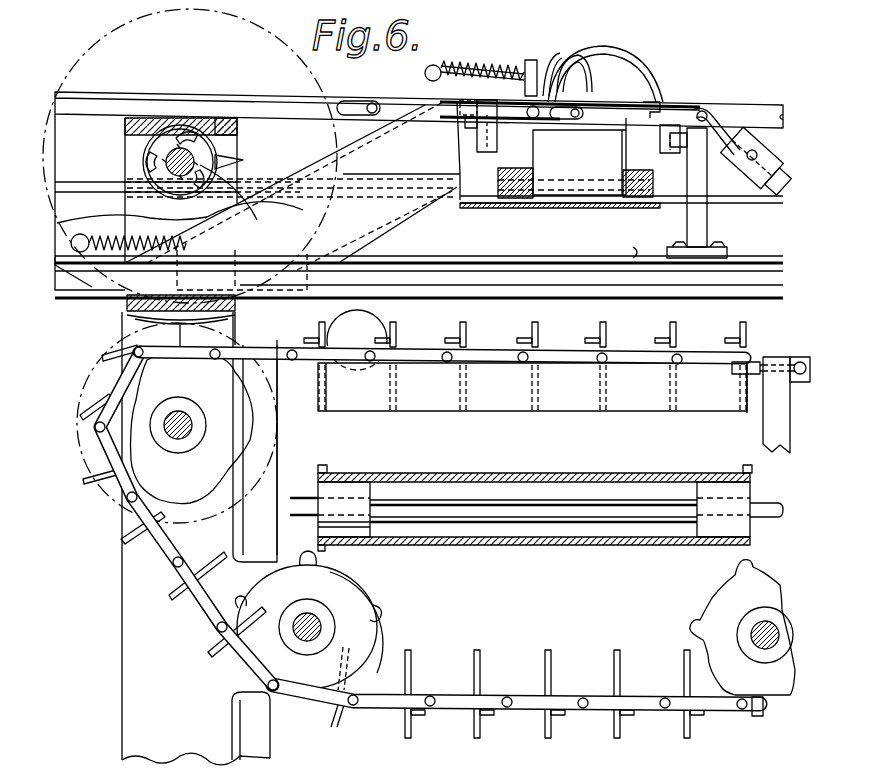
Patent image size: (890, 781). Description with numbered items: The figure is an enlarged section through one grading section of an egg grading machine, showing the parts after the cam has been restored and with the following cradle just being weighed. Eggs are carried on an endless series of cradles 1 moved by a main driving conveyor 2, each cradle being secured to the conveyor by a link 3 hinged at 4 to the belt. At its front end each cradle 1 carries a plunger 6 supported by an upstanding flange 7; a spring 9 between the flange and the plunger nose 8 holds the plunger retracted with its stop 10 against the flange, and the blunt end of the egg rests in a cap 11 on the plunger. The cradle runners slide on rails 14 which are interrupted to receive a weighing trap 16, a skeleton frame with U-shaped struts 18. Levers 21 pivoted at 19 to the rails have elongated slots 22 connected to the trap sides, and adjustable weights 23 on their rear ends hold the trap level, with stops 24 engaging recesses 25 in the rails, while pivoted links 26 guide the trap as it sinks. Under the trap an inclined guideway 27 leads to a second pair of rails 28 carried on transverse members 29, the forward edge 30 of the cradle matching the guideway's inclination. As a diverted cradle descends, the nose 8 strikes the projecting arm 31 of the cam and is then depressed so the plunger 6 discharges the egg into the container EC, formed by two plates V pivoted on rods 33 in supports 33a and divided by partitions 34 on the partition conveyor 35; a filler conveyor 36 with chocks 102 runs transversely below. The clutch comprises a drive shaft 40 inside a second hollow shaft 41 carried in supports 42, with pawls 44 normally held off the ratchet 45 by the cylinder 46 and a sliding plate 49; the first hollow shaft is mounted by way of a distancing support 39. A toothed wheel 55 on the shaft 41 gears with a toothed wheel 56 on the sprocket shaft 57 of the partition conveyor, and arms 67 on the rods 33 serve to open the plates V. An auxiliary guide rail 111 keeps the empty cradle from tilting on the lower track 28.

The cradle 1 is at (632, 100).
The main driving conveyor 2 is at (670, 203).
The link 3 is at (553, 198).
The hinge 4 is at (600, 205).
The plunger 6 is at (457, 64).
The upstanding flange 7 is at (540, 60).
The nose 8 is at (433, 65).
The spring 9 is at (484, 67).
The stop 10 is at (562, 64).
The cap 11 is at (590, 62).
The rail 14 is at (748, 110).
The weighing platform or trap 16 is at (662, 110).
The U-shaped strut 18 is at (485, 135).
The pivot 19 is at (710, 127).
The lever 21 is at (654, 130).
The elongated slot 22 is at (565, 118).
The adjustable weight 23 is at (753, 175).
The stop 24 is at (470, 123).
The recess 25 is at (470, 103).
The pivoted link 26 is at (380, 105).
The inclined guideway 27 is at (410, 211).
The second pair of rails 28 is at (467, 288).
The transverse member 29 is at (122, 306).
The forward edge 30 is at (526, 66).
The projecting arm 31 is at (232, 162).
The rod 33 is at (733, 362).
The support 33a is at (282, 433).
The partition 34 is at (466, 332).
The partition conveyor 35 is at (522, 680).
The filler conveyor 36 is at (478, 473).
The distancing support 39 is at (132, 162).
The drive shaft 40 is at (261, 219).
The second hollow shaft 41 is at (200, 158).
The support 42 is at (237, 124).
The pawl 44 is at (147, 155).
The ratchet 45 is at (172, 148).
The cylinder 46 is at (241, 201).
The sliding plate 49 is at (186, 128).
The toothed wheel 55 is at (250, 18).
The toothed wheel 56 is at (80, 430).
The sprocket shaft 57 is at (183, 440).
The projecting arm 67 is at (802, 357).
The chock 102 is at (325, 468).
The auxiliary guide rail 111 is at (618, 243).
The plate V is at (657, 407).
The container EC is at (532, 442).